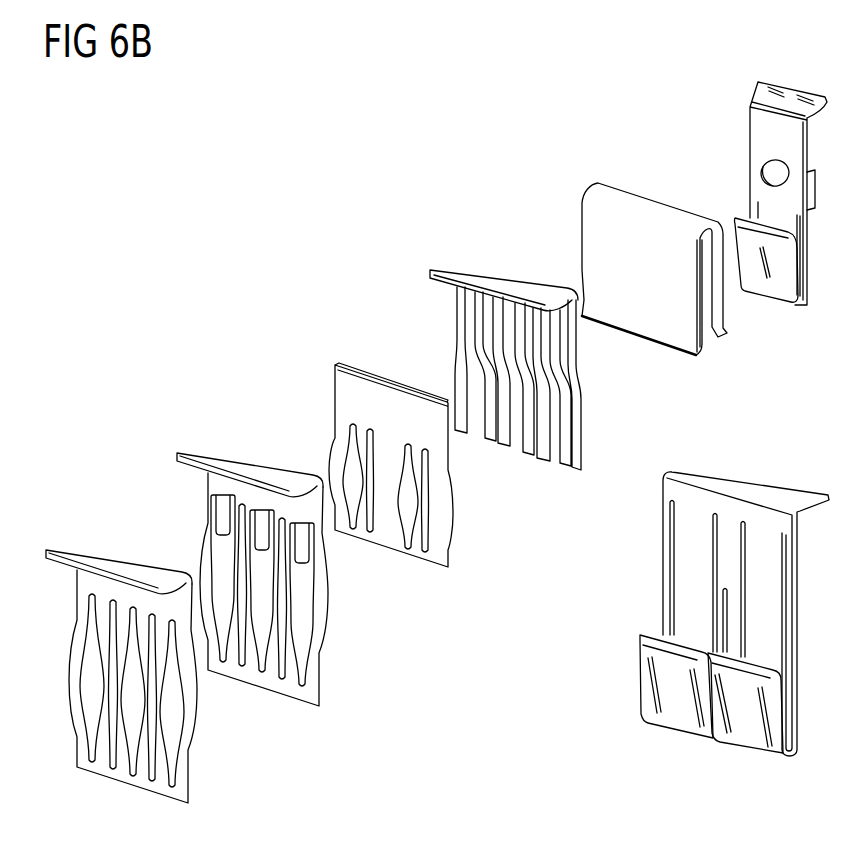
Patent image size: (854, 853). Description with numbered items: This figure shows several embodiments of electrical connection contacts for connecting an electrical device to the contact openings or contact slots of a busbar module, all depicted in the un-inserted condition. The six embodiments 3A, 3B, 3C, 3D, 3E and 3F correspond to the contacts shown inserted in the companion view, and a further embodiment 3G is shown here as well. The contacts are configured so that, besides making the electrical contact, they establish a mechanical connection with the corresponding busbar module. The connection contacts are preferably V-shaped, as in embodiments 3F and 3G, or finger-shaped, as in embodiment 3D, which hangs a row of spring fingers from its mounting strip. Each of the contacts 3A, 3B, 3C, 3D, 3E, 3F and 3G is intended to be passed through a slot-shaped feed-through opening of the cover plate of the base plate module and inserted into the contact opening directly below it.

The electrical connection contact 3A is at (77, 542).
The electrical connection contact 3B is at (202, 442).
The electrical connection contact 3C is at (333, 368).
The electrical connection contact 3D is at (453, 262).
The electrical connection contact 3E is at (600, 192).
The electrical connection contact 3F is at (772, 82).
The connection contact 3G is at (687, 465).